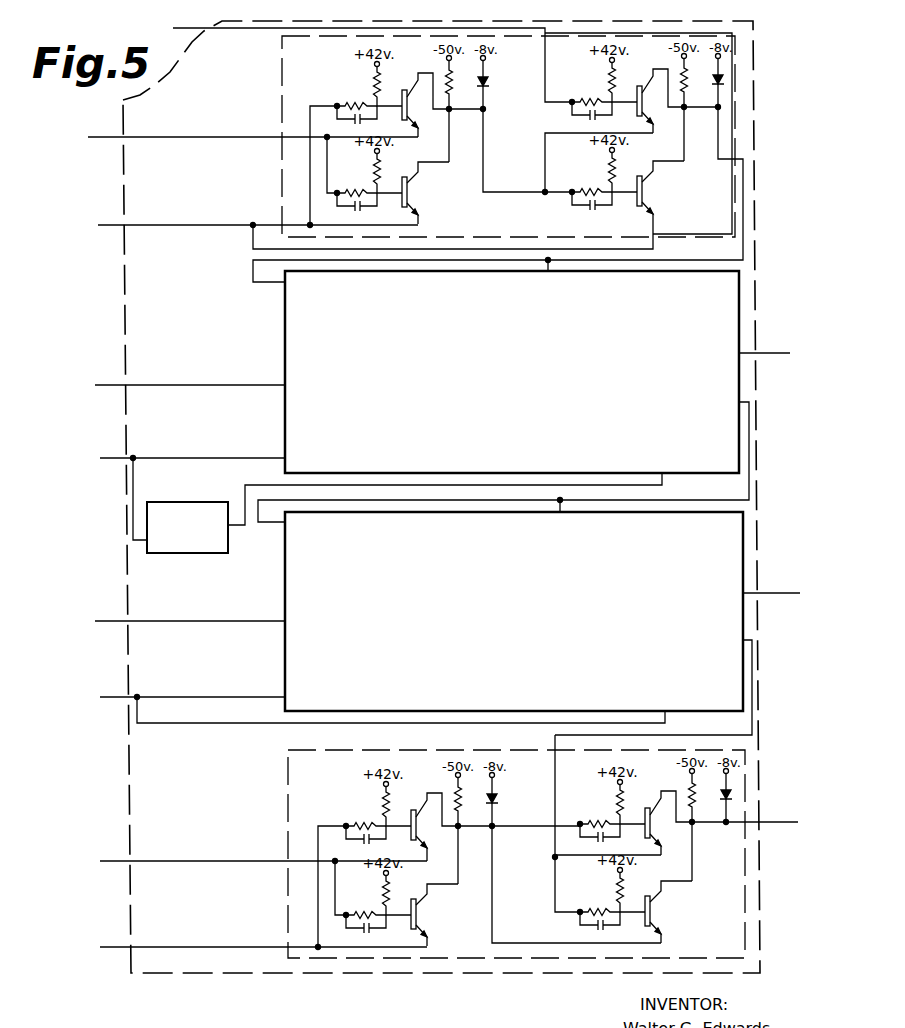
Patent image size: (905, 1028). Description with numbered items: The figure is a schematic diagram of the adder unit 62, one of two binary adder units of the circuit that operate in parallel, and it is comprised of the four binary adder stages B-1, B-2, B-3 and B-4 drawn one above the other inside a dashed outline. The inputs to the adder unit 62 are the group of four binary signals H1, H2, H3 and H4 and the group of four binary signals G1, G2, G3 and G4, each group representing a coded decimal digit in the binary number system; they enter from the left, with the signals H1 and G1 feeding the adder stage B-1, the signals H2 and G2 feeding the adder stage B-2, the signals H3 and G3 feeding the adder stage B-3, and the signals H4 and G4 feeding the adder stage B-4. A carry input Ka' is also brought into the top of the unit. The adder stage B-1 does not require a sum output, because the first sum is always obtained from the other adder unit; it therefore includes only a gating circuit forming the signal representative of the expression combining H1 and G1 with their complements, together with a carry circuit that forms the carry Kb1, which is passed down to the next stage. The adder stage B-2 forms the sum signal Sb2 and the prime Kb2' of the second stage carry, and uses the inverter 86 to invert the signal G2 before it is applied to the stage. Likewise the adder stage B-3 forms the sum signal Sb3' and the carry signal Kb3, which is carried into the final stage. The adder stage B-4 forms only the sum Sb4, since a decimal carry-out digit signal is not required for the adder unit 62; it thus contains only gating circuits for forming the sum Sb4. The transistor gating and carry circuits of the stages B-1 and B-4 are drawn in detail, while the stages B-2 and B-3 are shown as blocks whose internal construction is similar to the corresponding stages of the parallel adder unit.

The adder unit 62 is at (367, 975).
The inverter 86 is at (176, 546).
The adder stage B-1 is at (282, 68).
The adder stage B-2 is at (285, 329).
The adder stage B-3 is at (285, 582).
The adder stage B-4 is at (288, 784).
The binary input signal H1 is at (104, 137).
The binary input signal G1 is at (112, 224).
The binary input signal H2 is at (109, 384).
The binary input signal G2 is at (113, 457).
The binary input signal H3 is at (109, 621).
The binary input signal G3 is at (113, 697).
The binary input signal H4 is at (115, 860).
The binary input signal G4 is at (115, 946).
The carry input Ka' is at (360, 55).
The carry signal Kb1 is at (752, 173).
The sum signal Sb2 is at (773, 353).
The prime of second stage carry Kb2' is at (529, 462).
The sum signal Sb3' is at (773, 574).
The carry signal Kb3 is at (752, 668).
The sum signal Sb4 is at (776, 821).